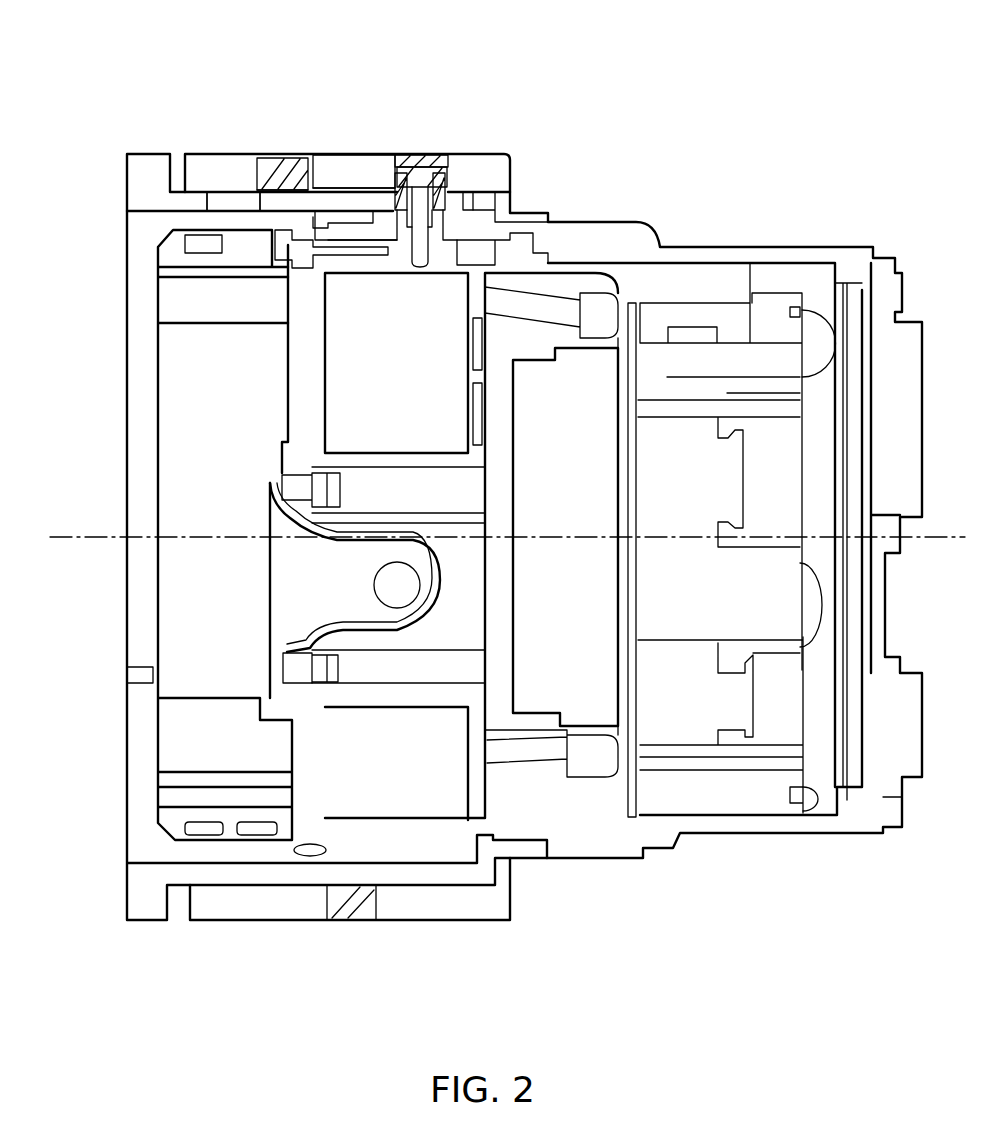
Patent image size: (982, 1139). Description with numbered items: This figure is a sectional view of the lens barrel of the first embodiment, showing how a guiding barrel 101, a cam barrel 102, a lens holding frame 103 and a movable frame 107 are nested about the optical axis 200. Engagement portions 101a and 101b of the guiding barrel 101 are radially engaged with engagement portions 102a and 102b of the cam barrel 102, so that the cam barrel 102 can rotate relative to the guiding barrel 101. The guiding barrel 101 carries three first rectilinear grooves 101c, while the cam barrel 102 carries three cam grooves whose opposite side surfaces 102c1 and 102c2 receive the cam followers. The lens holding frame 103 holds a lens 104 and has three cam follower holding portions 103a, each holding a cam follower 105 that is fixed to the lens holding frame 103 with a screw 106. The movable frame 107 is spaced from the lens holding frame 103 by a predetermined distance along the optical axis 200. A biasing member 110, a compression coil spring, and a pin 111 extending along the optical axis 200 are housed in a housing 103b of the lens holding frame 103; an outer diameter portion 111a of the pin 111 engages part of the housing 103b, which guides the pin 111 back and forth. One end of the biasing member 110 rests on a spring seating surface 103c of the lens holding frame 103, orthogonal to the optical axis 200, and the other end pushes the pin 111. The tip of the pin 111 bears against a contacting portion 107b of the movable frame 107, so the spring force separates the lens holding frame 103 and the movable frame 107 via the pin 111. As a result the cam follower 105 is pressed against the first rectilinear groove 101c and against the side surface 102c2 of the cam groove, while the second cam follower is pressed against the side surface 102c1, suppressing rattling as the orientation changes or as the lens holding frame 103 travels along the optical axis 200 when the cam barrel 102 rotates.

The guiding barrel 101 is at (148, 188).
The engagement portion 101a is at (212, 182).
The engagement portion 101b is at (470, 186).
The first rectilinear groove 101c is at (273, 203).
The cam barrel 102 is at (343, 177).
The engagement portion 102a is at (208, 185).
The engagement portion 102b is at (484, 190).
The side surface of the cam groove 102c1 is at (390, 186).
The side surface of the cam groove 102c2 is at (447, 178).
The lens holding frame 103 is at (613, 290).
The cam follower holding portion 103a is at (497, 212).
The housing 103b is at (284, 188).
The spring seating surface 103c is at (353, 190).
The lens 104 is at (563, 457).
The cam follower 105 is at (450, 165).
The screw 106 is at (420, 155).
The movable frame 107 is at (180, 407).
The contacting portion 107b is at (285, 250).
The biasing member 110 is at (322, 185).
The pin 111 is at (250, 190).
The outer diameter portion 111a is at (282, 186).
The optical axis 200 is at (87, 537).